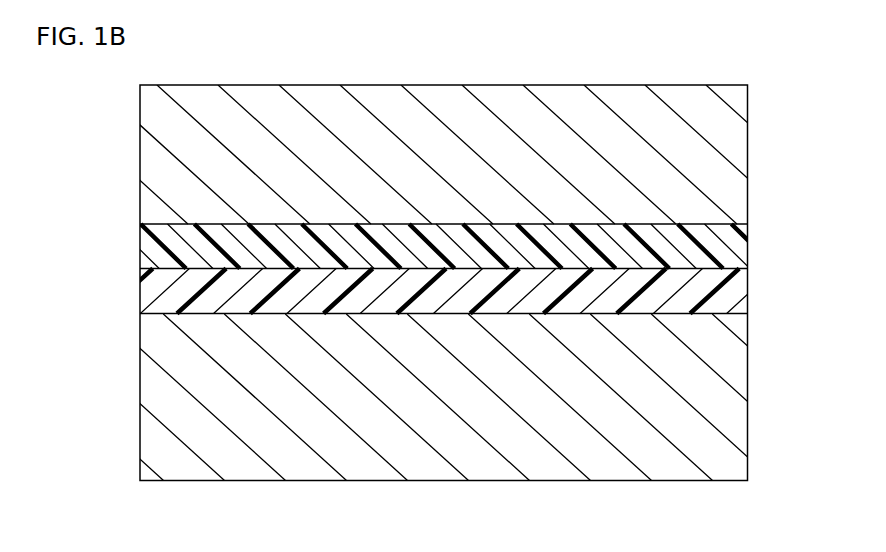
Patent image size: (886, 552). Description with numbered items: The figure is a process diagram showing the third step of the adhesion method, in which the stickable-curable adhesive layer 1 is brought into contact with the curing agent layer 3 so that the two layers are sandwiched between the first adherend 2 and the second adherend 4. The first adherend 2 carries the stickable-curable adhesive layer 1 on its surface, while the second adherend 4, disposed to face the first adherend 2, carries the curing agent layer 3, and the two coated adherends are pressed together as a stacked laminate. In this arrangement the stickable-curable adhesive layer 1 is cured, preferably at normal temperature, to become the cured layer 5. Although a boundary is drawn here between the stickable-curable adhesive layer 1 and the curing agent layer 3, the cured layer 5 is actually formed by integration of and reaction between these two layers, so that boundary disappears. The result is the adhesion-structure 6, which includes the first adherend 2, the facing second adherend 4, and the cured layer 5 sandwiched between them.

The stickable-curable adhesive layer 1 is at (748, 292).
The first adherend 2 is at (748, 417).
The curing agent layer 3 is at (748, 240).
The second adherend 4 is at (748, 164).
The cured layer 5 is at (133, 226).
The adhesion-structure 6 is at (453, 530).